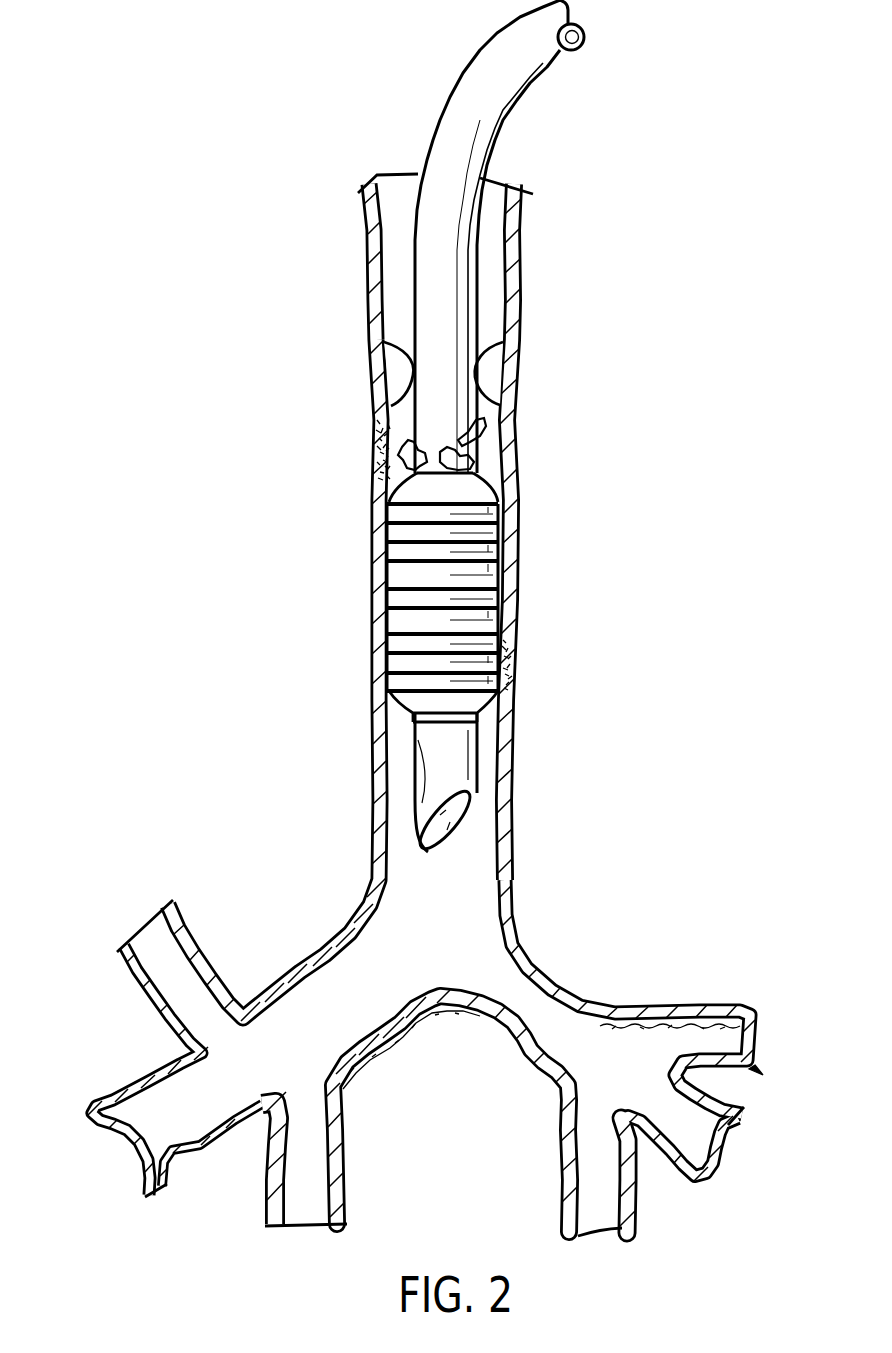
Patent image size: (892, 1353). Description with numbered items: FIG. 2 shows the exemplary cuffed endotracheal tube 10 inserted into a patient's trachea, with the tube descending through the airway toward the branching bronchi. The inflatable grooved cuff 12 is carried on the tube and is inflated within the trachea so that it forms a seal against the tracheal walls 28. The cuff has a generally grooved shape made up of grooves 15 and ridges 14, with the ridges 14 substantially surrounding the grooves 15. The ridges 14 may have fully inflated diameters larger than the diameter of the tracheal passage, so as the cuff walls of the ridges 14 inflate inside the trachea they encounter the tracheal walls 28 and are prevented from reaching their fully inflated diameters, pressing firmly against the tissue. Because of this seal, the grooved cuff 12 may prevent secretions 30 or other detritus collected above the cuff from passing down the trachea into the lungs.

The cuffed endotracheal tube 10 is at (376, 96).
The grooved cuff 12 is at (399, 578).
The ridges 14 is at (396, 506).
The grooves 15 is at (398, 666).
The tracheal wall 28 is at (505, 437).
The secretions 30 is at (393, 452).